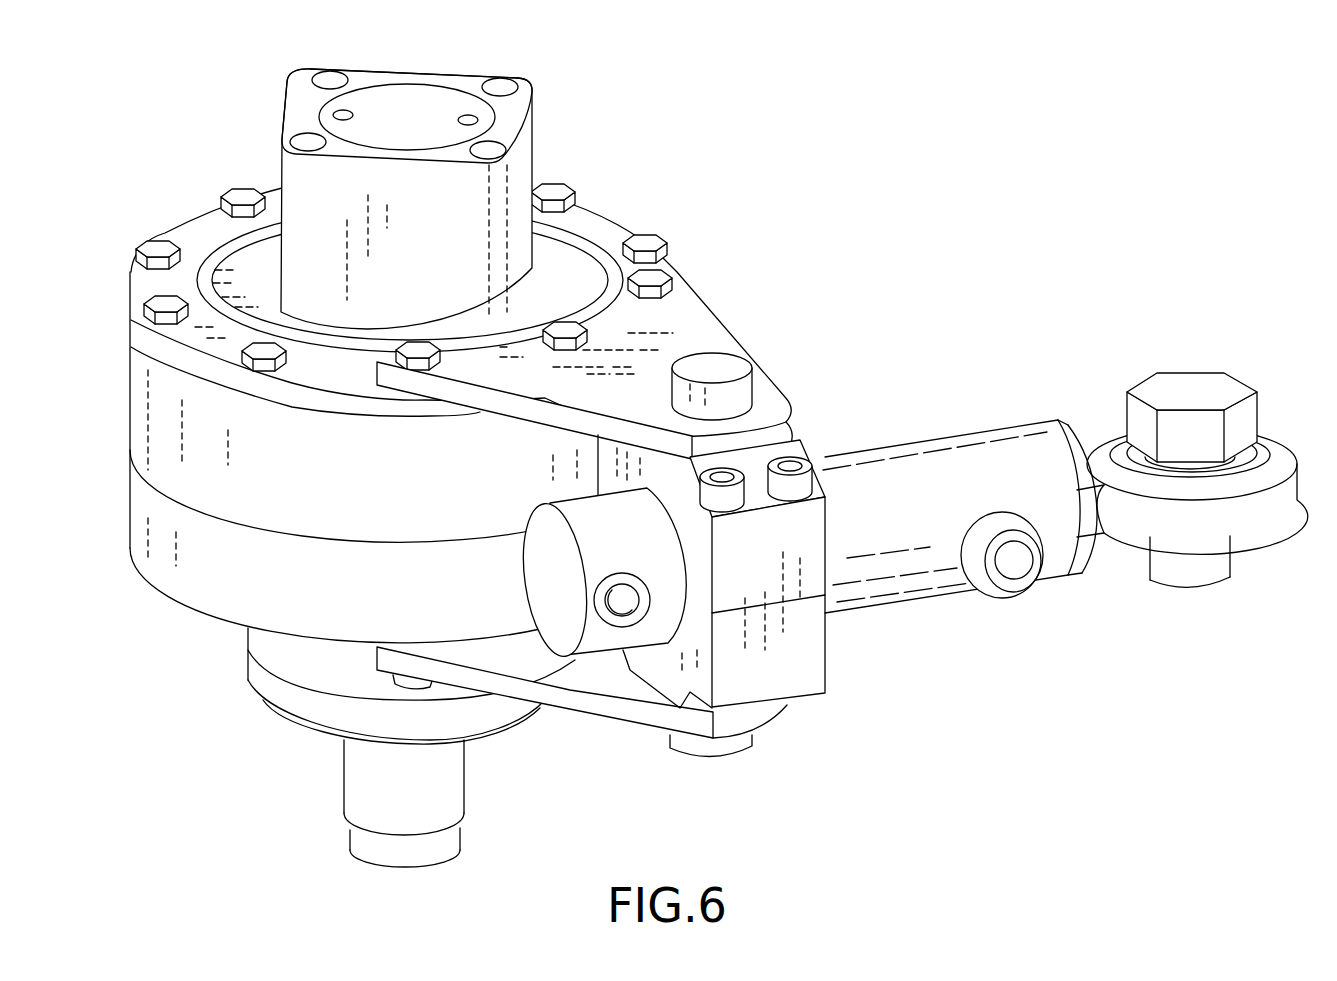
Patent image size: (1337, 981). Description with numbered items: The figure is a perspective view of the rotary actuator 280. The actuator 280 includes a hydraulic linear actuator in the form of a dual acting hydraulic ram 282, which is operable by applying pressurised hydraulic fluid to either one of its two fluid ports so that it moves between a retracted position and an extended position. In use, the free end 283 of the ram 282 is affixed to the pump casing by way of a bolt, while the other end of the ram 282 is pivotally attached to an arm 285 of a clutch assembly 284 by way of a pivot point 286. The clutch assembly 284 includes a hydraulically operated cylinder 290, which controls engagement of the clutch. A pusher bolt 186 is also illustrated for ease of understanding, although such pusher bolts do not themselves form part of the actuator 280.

The actuator 280 is at (942, 277).
The dual acting hydraulic ram 282 is at (927, 590).
The free end 283 is at (1207, 465).
The clutch assembly 284 is at (180, 600).
The arm 285 is at (685, 293).
The pivot point 286 is at (732, 370).
The hydraulically operated cylinder 290 is at (427, 86).
The pusher bolt 186 is at (383, 843).